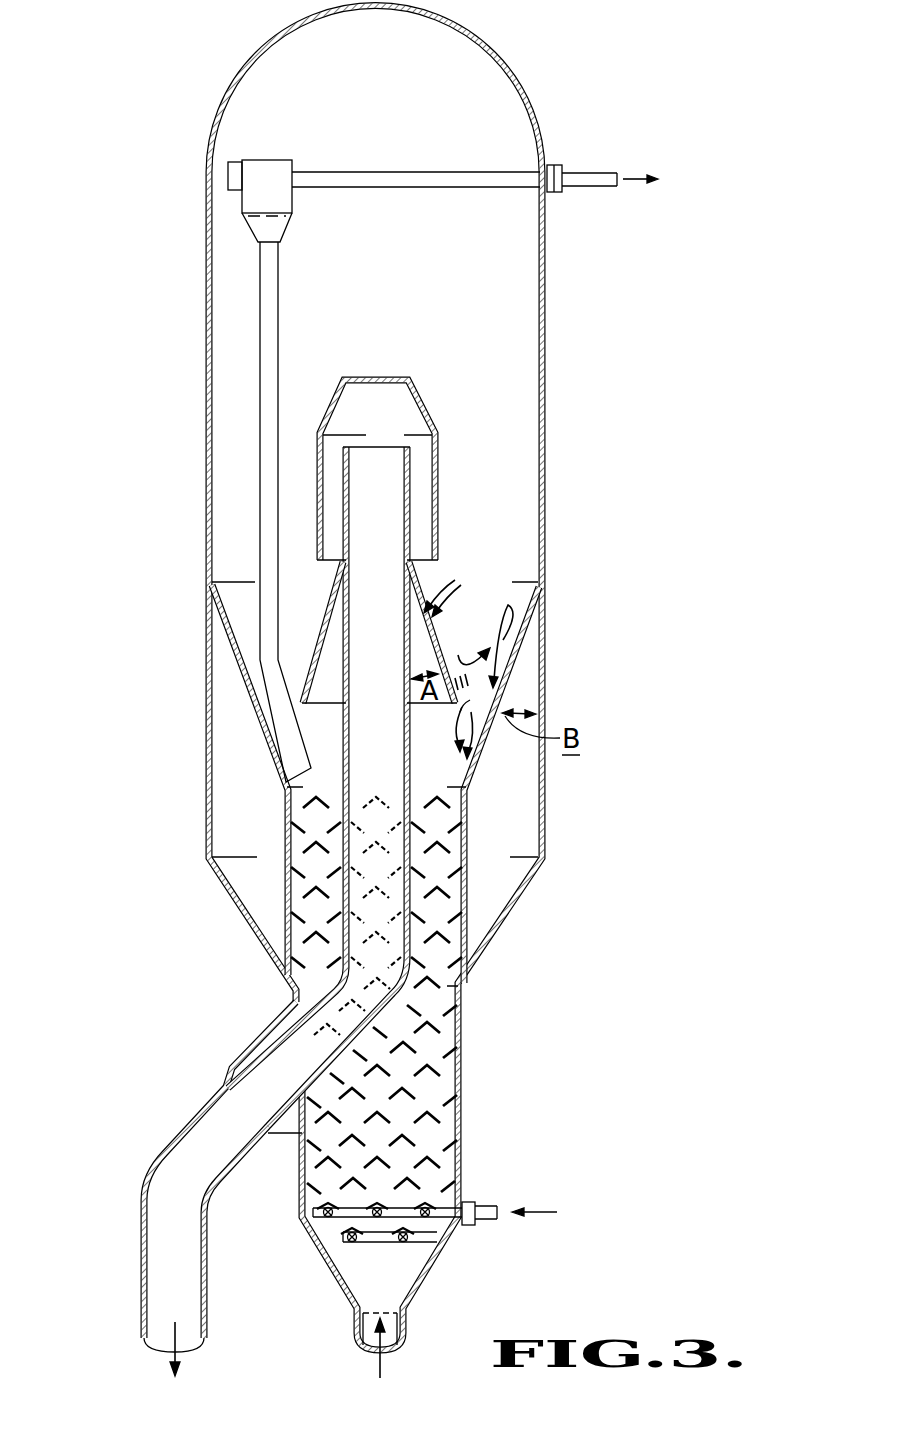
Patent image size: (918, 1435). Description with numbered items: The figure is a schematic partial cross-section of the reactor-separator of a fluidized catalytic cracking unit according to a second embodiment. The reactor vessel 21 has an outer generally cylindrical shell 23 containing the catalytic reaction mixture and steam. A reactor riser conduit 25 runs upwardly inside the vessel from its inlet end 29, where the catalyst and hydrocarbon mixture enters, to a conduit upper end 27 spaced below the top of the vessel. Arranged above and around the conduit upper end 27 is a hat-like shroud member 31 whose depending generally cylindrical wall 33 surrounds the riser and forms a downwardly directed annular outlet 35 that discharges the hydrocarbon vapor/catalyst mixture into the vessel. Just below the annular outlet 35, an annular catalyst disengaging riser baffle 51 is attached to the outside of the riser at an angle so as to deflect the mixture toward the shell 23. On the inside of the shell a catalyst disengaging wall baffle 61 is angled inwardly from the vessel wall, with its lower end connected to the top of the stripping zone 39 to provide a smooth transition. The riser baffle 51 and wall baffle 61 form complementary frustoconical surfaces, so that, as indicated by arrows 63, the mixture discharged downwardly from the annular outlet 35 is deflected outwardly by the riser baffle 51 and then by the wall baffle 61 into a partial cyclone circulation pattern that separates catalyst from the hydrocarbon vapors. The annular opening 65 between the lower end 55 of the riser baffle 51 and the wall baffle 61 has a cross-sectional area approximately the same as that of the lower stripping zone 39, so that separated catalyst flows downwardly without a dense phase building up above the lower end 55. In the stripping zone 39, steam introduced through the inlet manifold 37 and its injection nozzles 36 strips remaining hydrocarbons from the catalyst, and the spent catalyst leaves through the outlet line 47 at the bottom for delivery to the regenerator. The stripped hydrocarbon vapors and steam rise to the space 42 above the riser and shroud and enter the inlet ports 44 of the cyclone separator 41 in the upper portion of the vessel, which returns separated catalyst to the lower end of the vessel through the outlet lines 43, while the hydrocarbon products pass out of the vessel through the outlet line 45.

The reactor vessel 21 is at (241, 70).
The outer generally cylindrical shell 23 is at (546, 452).
The reactor riser conduit 25 is at (344, 525).
The conduit upper end 27 is at (388, 447).
The inlet end 29 is at (157, 1343).
The hat-like shroud member 31 is at (390, 380).
The depending generally cylindrical wall 33 is at (438, 487).
The annular outlet 35 is at (333, 560).
The injection nozzles 36 is at (403, 1235).
The inlet manifold 37 is at (437, 1243).
The stripping zone 39 is at (427, 956).
The cyclone separator 41 is at (292, 208).
The space 42 is at (503, 347).
The outlet lines 43 is at (262, 440).
The inlet ports 44 is at (237, 163).
The outlet line 45 is at (590, 172).
The outlet line 47 is at (378, 1349).
The annular catalyst disengaging riser baffle 51 is at (426, 631).
The lower end of the riser baffle 55 is at (455, 722).
The catalyst disengaging wall baffle 61 is at (516, 655).
The arrows 63 is at (444, 766).
The annular opening 65 is at (478, 698).